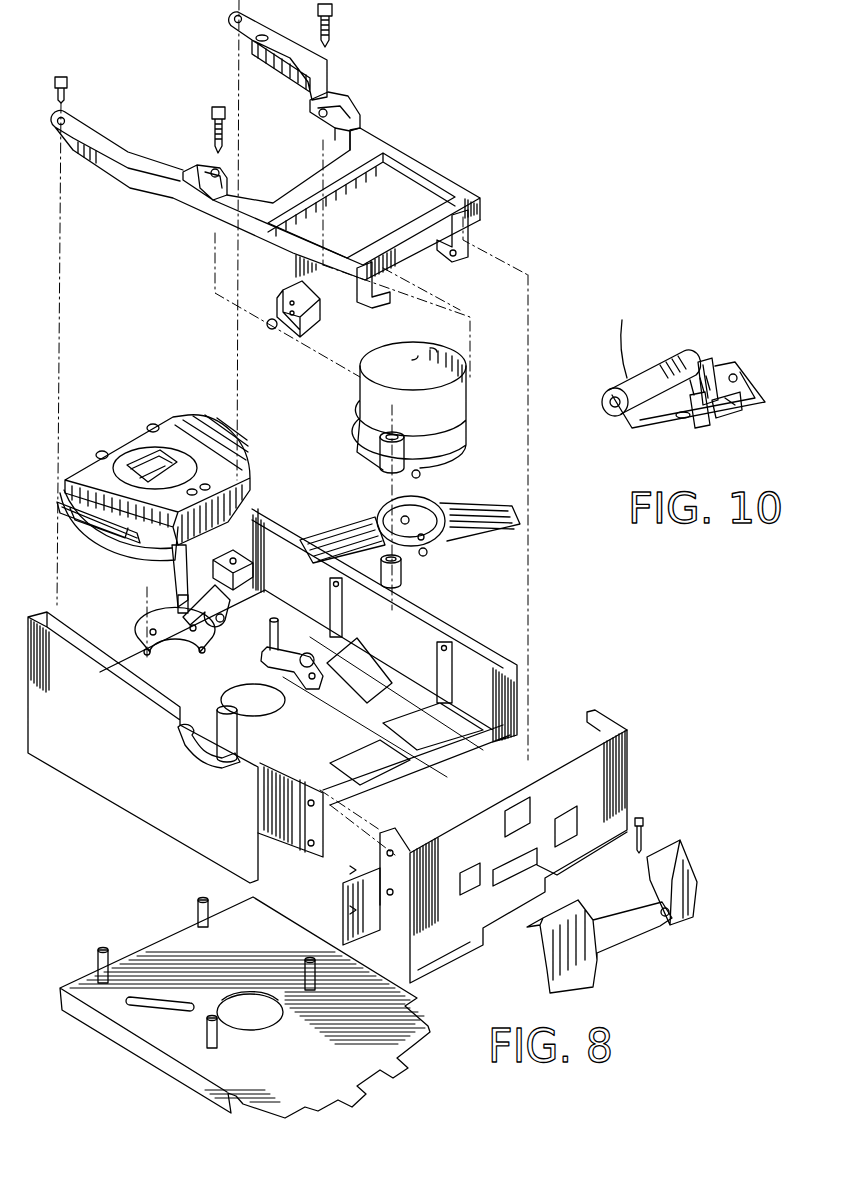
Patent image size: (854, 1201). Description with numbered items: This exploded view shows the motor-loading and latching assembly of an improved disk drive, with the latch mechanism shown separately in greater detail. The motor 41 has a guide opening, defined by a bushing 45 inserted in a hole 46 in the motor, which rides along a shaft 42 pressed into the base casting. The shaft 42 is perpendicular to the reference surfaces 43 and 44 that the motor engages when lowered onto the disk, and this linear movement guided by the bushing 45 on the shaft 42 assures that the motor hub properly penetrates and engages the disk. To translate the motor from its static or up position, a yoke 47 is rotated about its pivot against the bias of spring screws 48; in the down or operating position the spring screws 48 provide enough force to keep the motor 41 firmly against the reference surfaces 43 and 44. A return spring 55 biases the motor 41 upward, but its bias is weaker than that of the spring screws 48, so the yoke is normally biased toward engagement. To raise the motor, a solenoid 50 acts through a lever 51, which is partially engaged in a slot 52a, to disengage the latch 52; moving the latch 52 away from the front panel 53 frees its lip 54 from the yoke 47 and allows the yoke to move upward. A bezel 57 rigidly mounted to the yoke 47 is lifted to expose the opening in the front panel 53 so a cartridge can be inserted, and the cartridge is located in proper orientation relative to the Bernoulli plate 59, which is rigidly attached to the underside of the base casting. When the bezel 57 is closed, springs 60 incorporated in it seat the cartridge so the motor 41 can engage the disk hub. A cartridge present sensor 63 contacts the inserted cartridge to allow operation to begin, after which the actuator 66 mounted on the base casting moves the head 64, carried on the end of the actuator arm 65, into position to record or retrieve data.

In FIG. 8, the motor 41 is at (403, 352).
In FIG. 8, the shaft 42 is at (237, 742).
In FIG. 8, the reference surface 43 is at (306, 660).
In FIG. 8, the reference surface 44 is at (180, 731).
In FIG. 8, the bushing 45 is at (400, 572).
In FIG. 8, the hole 46 is at (372, 432).
In FIG. 8, the yoke 47 is at (435, 173).
In FIG. 8, the spring screws 48 is at (331, 20).
In FIG. 10, the solenoid 50 is at (652, 372).
In FIG. 10, the lever 51 is at (705, 363).
In FIG. 10, the latch 52 is at (750, 407).
In FIG. 10, the slot 52a is at (717, 417).
In FIG. 8, the front panel 53 is at (612, 758).
In FIG. 10, the lip 54 is at (700, 413).
In FIG. 8, the return spring 55 is at (490, 510).
In FIG. 8, the bezel 57 is at (682, 868).
In FIG. 8, the Bernoulli plate 59 is at (168, 942).
In FIG. 8, the springs 60 is at (665, 908).
In FIG. 8, the cartridge present sensor 63 is at (319, 330).
In FIG. 8, the head 64 is at (167, 608).
In FIG. 8, the actuator arm 65 is at (168, 578).
In FIG. 8, the actuator 66 is at (142, 440).